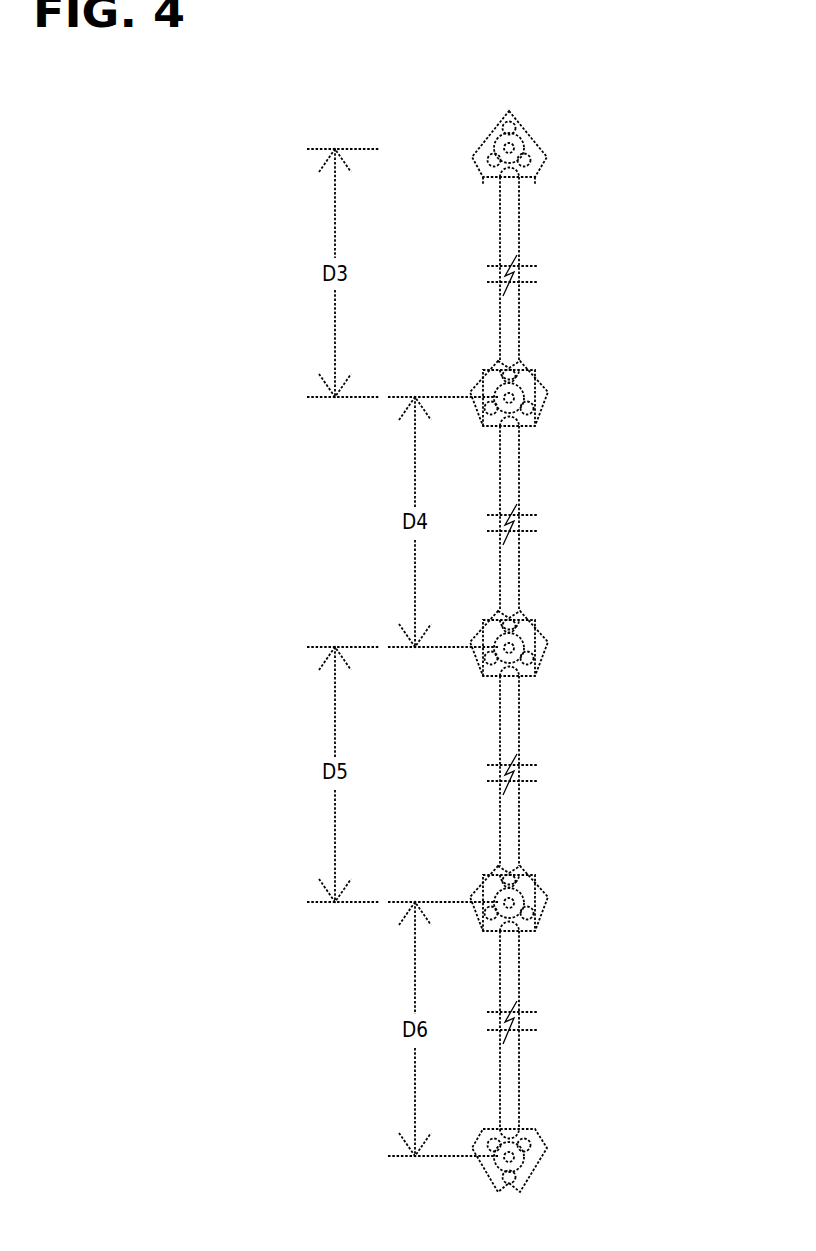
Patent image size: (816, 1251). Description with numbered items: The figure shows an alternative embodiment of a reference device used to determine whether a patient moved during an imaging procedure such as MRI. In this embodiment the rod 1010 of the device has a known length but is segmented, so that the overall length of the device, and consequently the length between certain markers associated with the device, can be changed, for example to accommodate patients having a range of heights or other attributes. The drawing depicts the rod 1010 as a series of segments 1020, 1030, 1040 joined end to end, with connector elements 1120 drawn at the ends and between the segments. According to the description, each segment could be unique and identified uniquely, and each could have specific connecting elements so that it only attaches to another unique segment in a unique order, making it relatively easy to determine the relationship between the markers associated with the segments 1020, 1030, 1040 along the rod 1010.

The connector hub 1120 is at (517, 108).
The rod 1010 is at (537, 240).
The second spacer segment 1020 is at (537, 485).
The third spacer segment 1030 is at (538, 740).
The fourth spacer segment 1040 is at (530, 981).